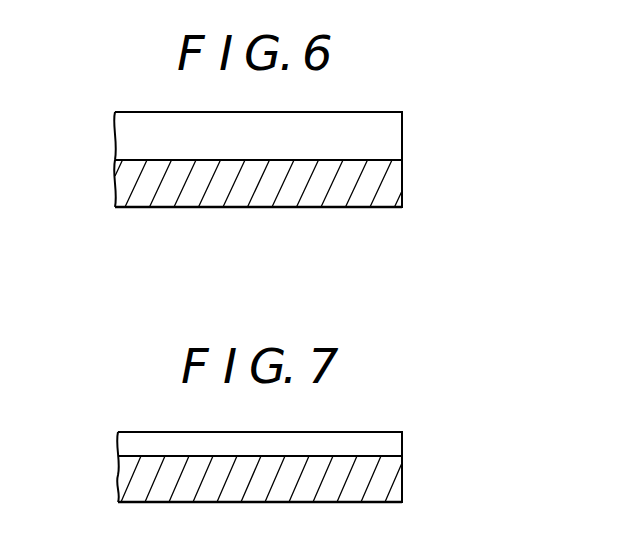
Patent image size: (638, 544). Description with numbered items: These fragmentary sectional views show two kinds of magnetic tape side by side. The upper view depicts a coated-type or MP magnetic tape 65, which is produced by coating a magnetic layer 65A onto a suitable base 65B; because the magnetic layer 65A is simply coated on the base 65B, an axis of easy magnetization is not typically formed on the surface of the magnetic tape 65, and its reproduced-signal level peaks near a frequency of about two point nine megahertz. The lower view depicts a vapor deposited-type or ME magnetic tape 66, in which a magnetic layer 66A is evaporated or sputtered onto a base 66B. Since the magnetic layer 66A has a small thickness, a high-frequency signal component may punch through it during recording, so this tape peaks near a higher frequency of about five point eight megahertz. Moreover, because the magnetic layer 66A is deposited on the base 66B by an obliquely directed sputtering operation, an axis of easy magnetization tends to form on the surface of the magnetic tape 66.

In FIG. 6, the coated-type magnetic tape 65 is at (352, 112).
In FIG. 6, the magnetic layer 65A is at (392, 141).
In FIG. 6, the base 65B is at (392, 190).
In FIG. 7, the vapor deposited-type magnetic tape 66 is at (352, 432).
In FIG. 7, the magnetic layer 66A is at (393, 446).
In FIG. 7, the base 66B is at (393, 484).